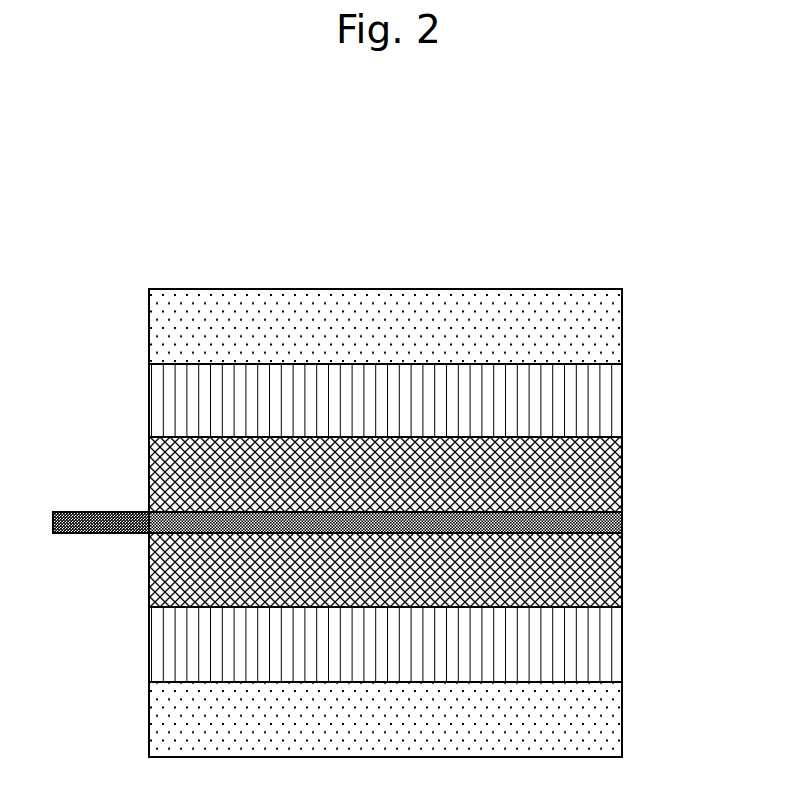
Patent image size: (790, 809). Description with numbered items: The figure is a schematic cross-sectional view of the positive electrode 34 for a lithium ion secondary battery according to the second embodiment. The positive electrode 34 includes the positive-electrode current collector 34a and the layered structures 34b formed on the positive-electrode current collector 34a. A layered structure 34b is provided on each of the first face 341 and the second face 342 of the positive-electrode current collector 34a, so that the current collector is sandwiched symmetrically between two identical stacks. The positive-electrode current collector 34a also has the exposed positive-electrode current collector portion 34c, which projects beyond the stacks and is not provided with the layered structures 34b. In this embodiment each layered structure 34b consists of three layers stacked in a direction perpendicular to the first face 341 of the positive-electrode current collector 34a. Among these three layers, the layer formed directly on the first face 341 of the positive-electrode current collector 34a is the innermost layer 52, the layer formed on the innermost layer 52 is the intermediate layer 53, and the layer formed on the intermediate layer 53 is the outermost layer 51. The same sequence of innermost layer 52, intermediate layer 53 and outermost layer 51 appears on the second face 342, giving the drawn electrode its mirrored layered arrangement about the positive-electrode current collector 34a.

The positive electrode 34 is at (387, 265).
The positive-electrode current collector 34a is at (612, 523).
The layered structure 34b is at (456, 523).
The exposed positive-electrode current collector portion 34c is at (147, 512).
The first face 341 is at (73, 511).
The second face 342 is at (98, 534).
The outermost layer 51 is at (612, 323).
The innermost layer 52 is at (420, 522).
The intermediate layer 53 is at (612, 398).